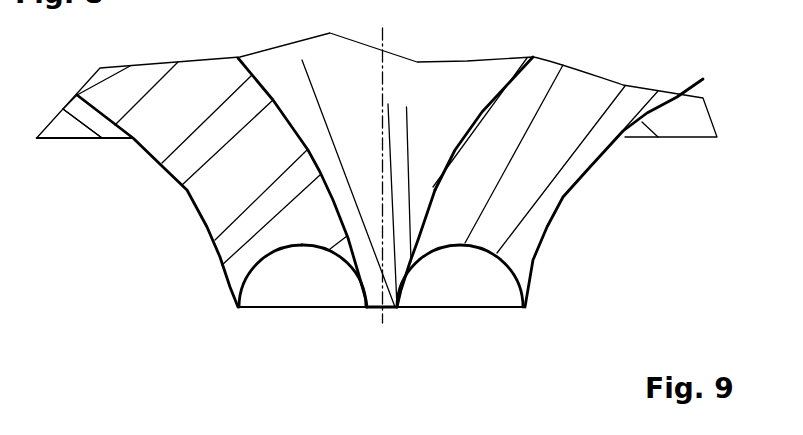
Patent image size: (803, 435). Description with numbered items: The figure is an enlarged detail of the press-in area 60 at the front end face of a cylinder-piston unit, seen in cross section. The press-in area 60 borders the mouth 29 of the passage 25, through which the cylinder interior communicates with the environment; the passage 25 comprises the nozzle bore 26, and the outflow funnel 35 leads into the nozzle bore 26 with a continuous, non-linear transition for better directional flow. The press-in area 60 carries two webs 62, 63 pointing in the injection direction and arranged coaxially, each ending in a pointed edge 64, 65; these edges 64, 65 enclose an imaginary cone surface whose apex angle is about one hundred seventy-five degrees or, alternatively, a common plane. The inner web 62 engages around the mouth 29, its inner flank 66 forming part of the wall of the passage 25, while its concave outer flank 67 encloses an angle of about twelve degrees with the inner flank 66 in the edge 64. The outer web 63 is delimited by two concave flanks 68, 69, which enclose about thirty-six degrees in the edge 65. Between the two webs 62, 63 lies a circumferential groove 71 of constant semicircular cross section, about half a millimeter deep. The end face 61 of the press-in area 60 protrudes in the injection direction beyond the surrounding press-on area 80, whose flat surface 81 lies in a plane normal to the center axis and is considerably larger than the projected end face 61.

The passage 25 is at (406, 107).
The nozzle bore 26 is at (388, 104).
The mouth 29 is at (386, 313).
The outflow funnel 35 is at (482, 112).
The press-in area 60 is at (492, 309).
The end face of the press-in area 61 is at (430, 253).
The inner web 62 is at (411, 262).
The outer web 63 is at (523, 290).
The pointed edge of the inner web 64 is at (365, 300).
The pointed edge of the outer web 65 is at (238, 308).
The inner flank 66 is at (302, 60).
The concave outer flank 67 is at (356, 268).
The concave flank 68 is at (246, 277).
The concave flank 69 is at (217, 253).
The circumferential groove 71 is at (290, 245).
The press-on area 80 is at (73, 141).
The flat surface 81 is at (105, 138).